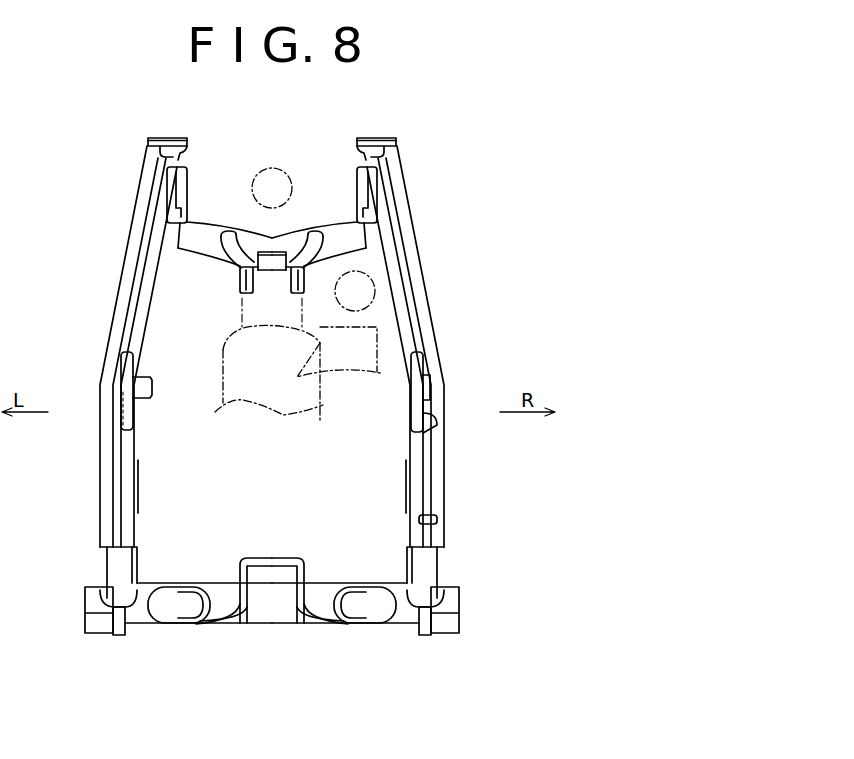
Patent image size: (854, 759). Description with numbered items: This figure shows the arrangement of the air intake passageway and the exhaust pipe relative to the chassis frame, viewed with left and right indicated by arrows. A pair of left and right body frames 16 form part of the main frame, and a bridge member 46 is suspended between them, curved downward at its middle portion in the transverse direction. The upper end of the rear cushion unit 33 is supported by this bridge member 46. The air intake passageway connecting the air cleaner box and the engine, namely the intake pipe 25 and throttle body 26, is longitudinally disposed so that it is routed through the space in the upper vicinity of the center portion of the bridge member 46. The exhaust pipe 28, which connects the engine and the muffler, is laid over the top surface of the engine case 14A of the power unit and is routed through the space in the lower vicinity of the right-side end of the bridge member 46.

The body frame 16 is at (413, 210).
The bridge member 46 is at (203, 231).
The intake pipe 25 is at (262, 162).
The throttle body 26 is at (329, 152).
The exhaust pipe 28 is at (335, 293).
The engine case 14A is at (378, 342).
The rear cushion unit 33 is at (258, 390).